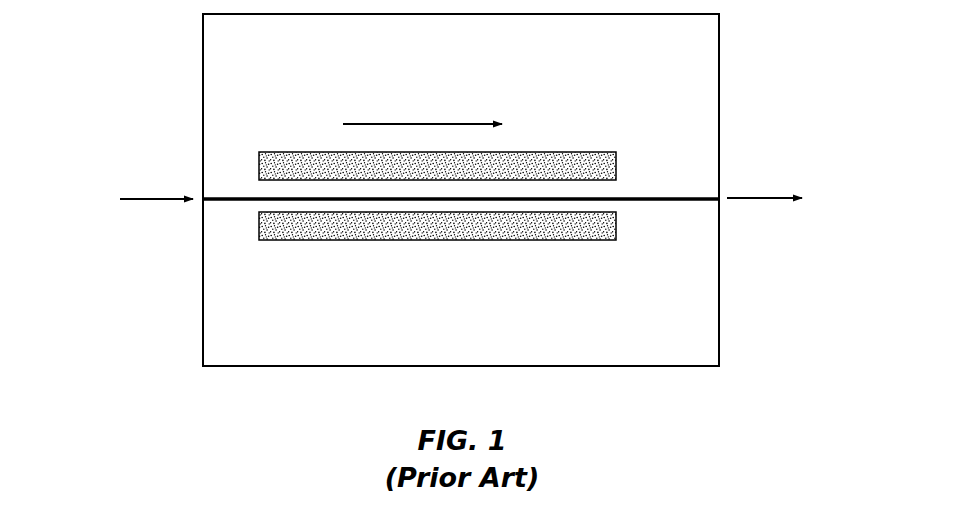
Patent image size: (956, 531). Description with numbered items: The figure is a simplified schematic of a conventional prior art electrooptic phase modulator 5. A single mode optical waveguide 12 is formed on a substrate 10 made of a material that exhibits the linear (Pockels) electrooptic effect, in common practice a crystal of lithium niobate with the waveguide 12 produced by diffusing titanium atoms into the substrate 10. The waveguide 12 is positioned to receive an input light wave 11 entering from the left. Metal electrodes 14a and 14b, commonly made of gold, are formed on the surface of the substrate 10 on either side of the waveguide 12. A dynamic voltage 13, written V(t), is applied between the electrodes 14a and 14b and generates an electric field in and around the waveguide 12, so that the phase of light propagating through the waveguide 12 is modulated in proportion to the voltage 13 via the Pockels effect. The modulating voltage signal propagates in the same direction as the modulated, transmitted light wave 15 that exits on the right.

The electrooptic phase modulator 5 is at (134, 401).
The substrate 10 is at (496, 338).
The input light wave 11 is at (111, 174).
The single mode optical waveguide 12 is at (461, 240).
The dynamic voltage V(t) 13 is at (432, 93).
The metal electrode 14a is at (478, 154).
The metal electrode 14b is at (478, 240).
The transmitted light wave 15 is at (809, 174).